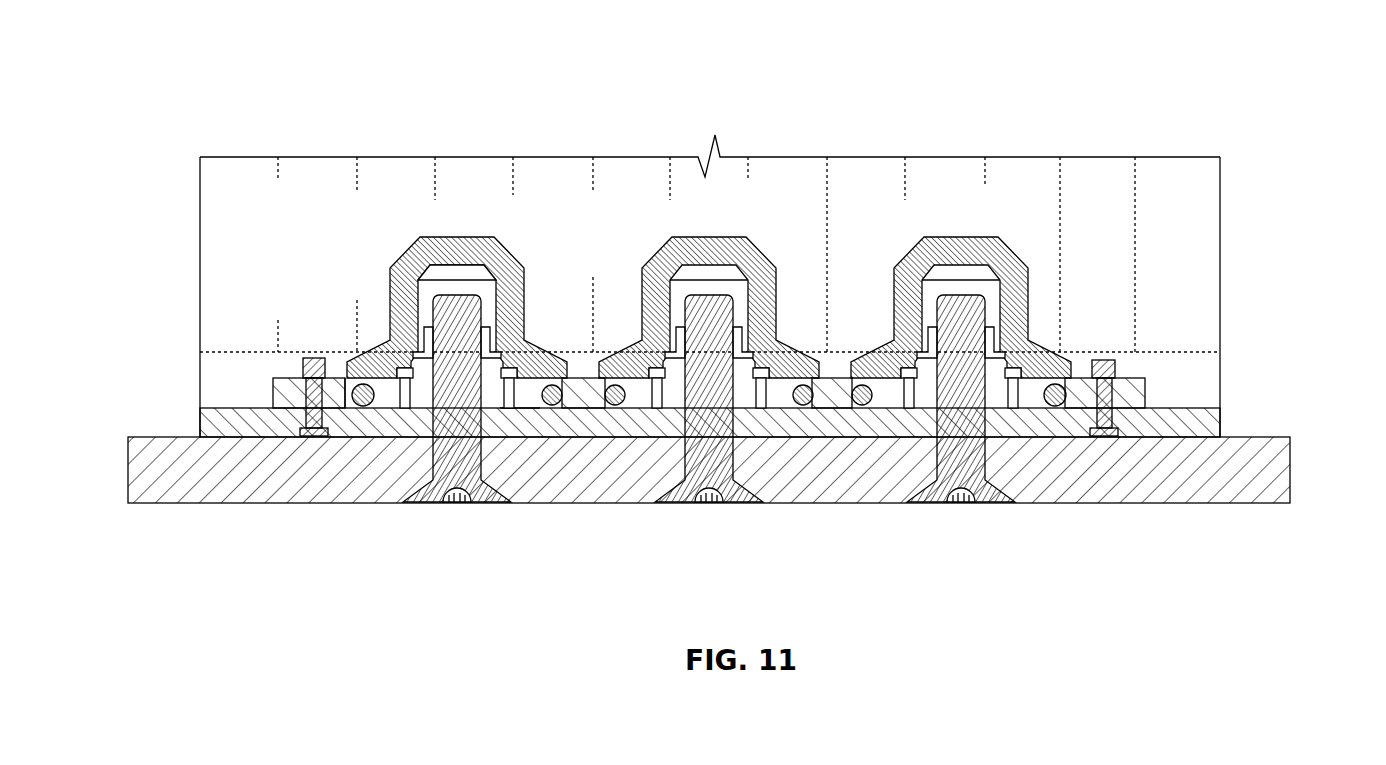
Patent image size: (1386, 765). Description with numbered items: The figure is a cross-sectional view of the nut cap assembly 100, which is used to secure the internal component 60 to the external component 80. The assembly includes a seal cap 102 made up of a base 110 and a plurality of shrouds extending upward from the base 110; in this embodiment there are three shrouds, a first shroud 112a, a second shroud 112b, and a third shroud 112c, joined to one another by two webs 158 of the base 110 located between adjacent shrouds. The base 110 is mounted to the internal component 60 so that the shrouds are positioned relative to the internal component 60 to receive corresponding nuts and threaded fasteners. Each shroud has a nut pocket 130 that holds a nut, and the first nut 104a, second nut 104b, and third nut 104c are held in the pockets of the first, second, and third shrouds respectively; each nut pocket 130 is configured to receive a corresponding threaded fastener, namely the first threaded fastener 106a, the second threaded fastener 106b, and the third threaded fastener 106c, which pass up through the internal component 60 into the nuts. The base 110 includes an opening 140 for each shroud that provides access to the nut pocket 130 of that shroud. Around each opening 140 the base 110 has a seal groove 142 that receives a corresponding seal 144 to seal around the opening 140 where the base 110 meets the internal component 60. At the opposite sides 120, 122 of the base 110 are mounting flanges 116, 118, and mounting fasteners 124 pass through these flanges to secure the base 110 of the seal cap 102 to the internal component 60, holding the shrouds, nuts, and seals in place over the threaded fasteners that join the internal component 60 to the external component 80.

The nut cap assembly 100 is at (1162, 100).
The seal cap 102 is at (988, 307).
The first nut 104a is at (432, 461).
The second nut 104b is at (750, 440).
The third nut 104c is at (1000, 440).
The first threaded fastener 106a is at (467, 424).
The second threaded fastener 106b is at (721, 349).
The third threaded fastener 106c is at (972, 349).
The base 110 is at (1147, 391).
The first shroud 112a is at (436, 301).
The second shroud 112b is at (685, 301).
The third shroud 112c is at (988, 307).
The mounting flange 116 is at (273, 392).
The mounting flange 118 is at (1140, 378).
The side 120 is at (205, 394).
The side 122 is at (1213, 395).
The mounting fastener 124 is at (317, 360).
The nut pocket 130 is at (471, 238).
The opening 140 is at (521, 410).
The seal groove 142 is at (343, 398).
The seal 144 is at (362, 403).
The web 158 is at (836, 378).
The internal component 60 is at (1217, 432).
The external component 80 is at (1290, 452).